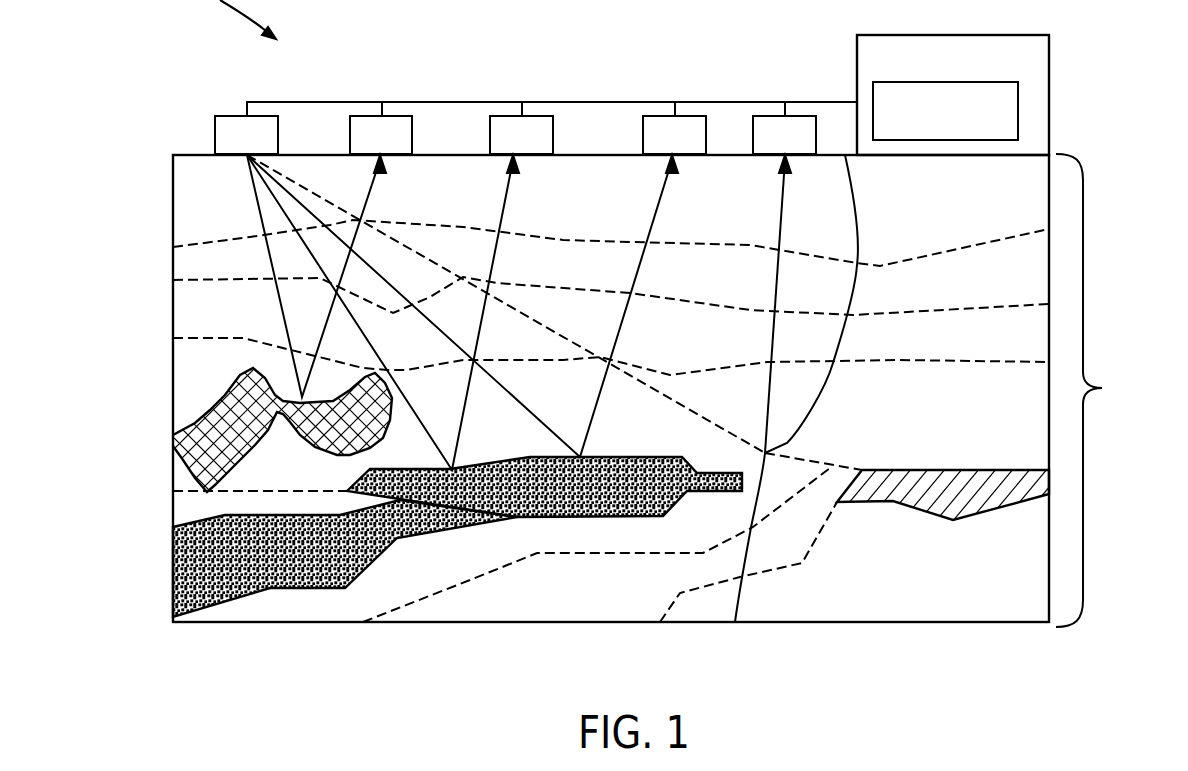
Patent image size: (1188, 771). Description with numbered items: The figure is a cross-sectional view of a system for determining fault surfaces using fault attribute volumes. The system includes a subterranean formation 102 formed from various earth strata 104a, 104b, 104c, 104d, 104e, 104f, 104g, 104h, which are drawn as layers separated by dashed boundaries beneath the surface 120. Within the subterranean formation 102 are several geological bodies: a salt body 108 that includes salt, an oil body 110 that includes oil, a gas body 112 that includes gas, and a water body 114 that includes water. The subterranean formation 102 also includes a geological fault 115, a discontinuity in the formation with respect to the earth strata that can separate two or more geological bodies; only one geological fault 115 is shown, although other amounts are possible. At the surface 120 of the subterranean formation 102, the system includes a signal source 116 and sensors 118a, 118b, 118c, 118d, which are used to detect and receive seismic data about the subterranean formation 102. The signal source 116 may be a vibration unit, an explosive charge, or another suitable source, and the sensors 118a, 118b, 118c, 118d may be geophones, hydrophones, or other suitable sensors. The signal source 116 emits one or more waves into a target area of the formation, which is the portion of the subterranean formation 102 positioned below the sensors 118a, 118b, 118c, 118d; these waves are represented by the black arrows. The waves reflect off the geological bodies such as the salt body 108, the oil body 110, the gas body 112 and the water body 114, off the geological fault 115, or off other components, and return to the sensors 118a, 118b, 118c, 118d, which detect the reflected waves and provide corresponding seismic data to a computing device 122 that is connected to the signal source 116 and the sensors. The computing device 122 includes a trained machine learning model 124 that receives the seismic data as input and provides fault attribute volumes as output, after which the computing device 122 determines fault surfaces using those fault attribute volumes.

The subterranean formation 102 is at (1102, 390).
The earth strata 104a is at (190, 220).
The earth strata 104b is at (190, 270).
The earth strata 104c is at (190, 322).
The earth strata 104d is at (190, 393).
The earth strata 104e is at (190, 508).
The earth strata 104f is at (287, 613).
The earth strata 104g is at (560, 613).
The earth strata 104h is at (873, 613).
The salt body 108 is at (227, 427).
The oil body 110 is at (617, 477).
The gas body 112 is at (925, 482).
The water body 114 is at (362, 550).
The geological fault 115 is at (853, 222).
The signal source 116 is at (234, 122).
The sensor 118a is at (368, 122).
The sensor 118b is at (510, 122).
The sensor 118c is at (660, 122).
The sensor 118d is at (770, 122).
The surface 120 is at (193, 154).
The computing device 122 is at (857, 54).
The trained machine learning model 124 is at (875, 100).